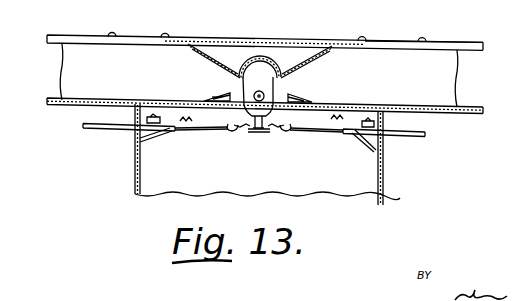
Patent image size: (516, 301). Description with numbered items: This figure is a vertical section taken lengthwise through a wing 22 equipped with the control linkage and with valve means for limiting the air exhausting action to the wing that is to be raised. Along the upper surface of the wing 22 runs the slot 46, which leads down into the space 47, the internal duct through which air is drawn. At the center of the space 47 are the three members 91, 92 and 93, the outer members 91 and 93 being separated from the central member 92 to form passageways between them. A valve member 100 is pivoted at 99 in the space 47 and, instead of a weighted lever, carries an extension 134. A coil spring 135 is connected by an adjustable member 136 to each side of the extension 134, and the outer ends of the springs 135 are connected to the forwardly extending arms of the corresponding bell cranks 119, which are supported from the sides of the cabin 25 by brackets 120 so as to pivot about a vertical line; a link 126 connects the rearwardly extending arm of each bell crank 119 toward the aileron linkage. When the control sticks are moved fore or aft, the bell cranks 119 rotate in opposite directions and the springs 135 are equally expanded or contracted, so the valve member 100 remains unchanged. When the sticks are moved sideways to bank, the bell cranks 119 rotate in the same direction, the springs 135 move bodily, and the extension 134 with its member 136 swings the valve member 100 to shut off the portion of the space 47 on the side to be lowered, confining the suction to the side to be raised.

The wing 22 is at (260, 38).
The slot 46 is at (383, 43).
The space 47 is at (259, 75).
The member 92 is at (196, 52).
The pivot 99 is at (266, 95).
The valve member 100 is at (277, 66).
The member 91 is at (218, 93).
The member 93 is at (299, 99).
The link 126 is at (97, 128).
The cabin 25 is at (135, 172).
The bell crank 119 is at (160, 130).
The bracket 120 is at (146, 140).
The extension 134 is at (260, 129).
The coil spring 135 is at (300, 139).
The adjustable member 136 is at (252, 131).